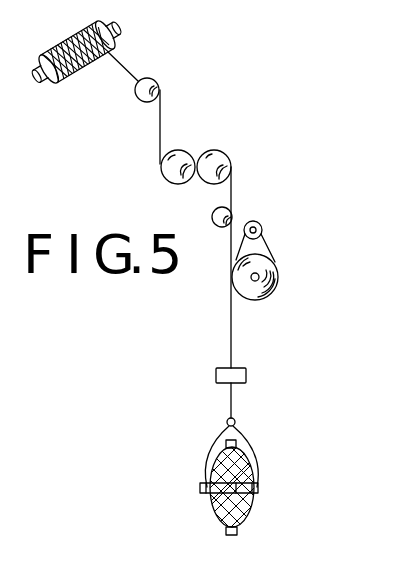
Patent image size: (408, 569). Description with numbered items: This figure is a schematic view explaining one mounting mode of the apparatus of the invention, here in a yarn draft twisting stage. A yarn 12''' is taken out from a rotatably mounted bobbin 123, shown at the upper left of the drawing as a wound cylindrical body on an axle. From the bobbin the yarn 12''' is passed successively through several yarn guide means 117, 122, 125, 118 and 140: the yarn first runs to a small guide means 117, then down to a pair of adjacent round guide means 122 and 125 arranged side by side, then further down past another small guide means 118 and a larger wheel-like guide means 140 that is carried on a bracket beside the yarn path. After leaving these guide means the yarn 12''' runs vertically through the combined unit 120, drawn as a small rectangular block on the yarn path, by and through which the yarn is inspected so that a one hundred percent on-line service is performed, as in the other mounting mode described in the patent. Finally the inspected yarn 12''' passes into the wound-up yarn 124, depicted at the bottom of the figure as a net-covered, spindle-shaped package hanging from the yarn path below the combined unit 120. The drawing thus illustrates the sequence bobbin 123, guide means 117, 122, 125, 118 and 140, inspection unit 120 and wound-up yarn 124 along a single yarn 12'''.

The bobbin 123 is at (61, 40).
The yarn 12''' is at (199, 222).
The yarn guide means 117 is at (136, 100).
The yarn guide means 122 is at (181, 150).
The yarn guide means 125 is at (232, 163).
The yarn guide means 118 is at (214, 226).
The yarn guide means 140 is at (278, 279).
The combined unit 120 is at (246, 376).
The wound-up yarn 124 is at (258, 488).